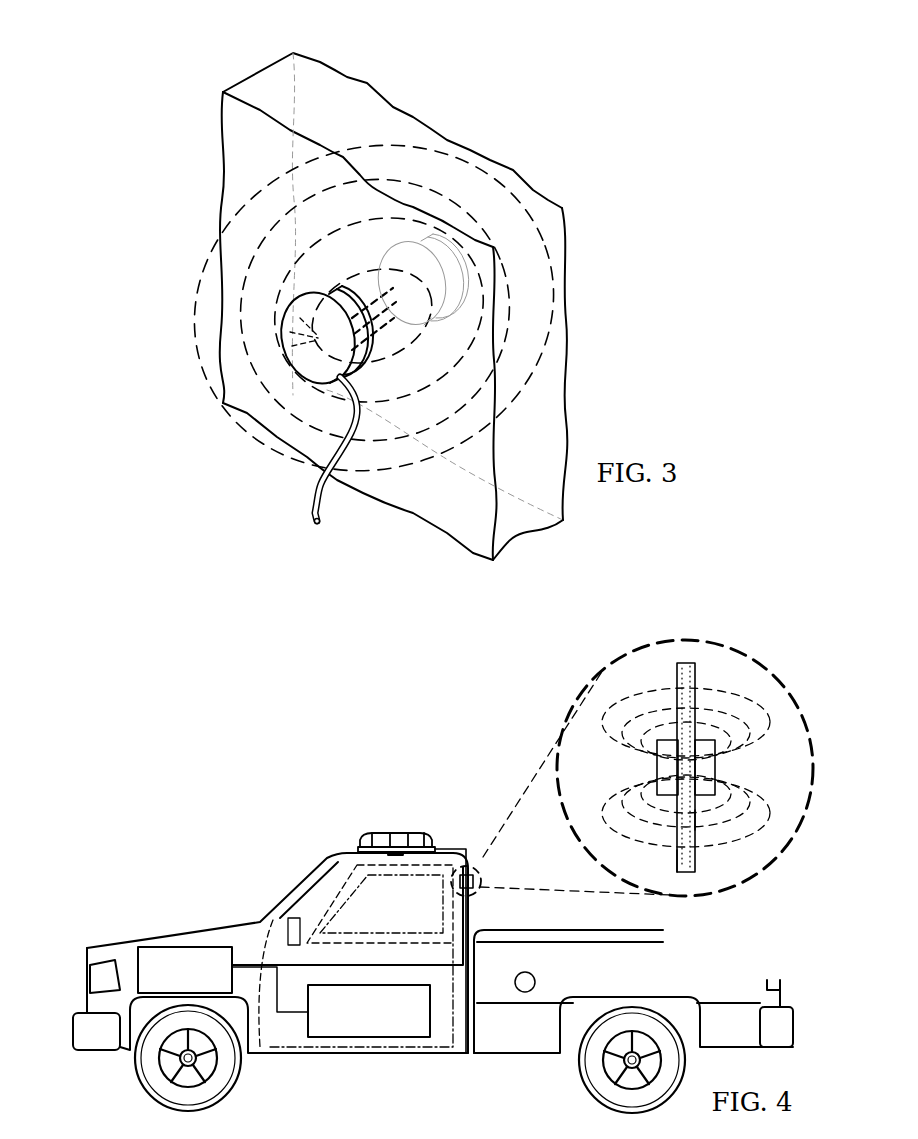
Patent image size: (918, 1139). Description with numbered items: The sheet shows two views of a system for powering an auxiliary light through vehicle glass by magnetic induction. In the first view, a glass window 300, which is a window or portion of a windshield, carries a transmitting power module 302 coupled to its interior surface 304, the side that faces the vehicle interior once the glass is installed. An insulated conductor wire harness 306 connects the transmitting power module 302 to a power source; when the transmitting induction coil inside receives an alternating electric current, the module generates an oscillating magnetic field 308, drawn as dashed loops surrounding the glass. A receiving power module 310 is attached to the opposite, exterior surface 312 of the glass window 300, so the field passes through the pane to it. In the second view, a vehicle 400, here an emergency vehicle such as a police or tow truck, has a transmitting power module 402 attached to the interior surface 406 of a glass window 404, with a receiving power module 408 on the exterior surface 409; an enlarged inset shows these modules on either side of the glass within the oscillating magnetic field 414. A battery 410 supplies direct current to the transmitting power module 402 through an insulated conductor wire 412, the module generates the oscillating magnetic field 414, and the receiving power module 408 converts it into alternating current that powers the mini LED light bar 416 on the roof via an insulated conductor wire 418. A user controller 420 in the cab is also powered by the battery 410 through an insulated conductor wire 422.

In FIG. 3, the glass window 300 is at (253, 76).
In FIG. 3, the transmitting power module 302 is at (298, 353).
In FIG. 3, the interior surface 304 is at (233, 172).
In FIG. 3, the insulated conductor wire harness 306 is at (310, 510).
In FIG. 3, the oscillating magnetic field 308 is at (239, 462).
In FIG. 3, the receiving power module 310 is at (417, 277).
In FIG. 3, the exterior surface 312 is at (567, 297).
In FIG. 4, the vehicle 400 is at (433, 891).
In FIG. 4, the transmitting power module 402 is at (452, 883).
In FIG. 4, the glass window 404 is at (678, 682).
In FIG. 4, the interior surface 406 is at (678, 853).
In FIG. 4, the receiving power module 408 is at (483, 872).
In FIG. 4, the exterior surface 409 is at (698, 817).
In FIG. 4, the battery 410 is at (187, 947).
In FIG. 4, the insulated conductor wire 412 is at (257, 963).
In FIG. 4, the oscillating magnetic field 414 is at (733, 908).
In FIG. 4, the mini LED light bar 416 is at (397, 833).
In FIG. 4, the insulated conductor wire 418 is at (450, 850).
In FIG. 4, the user controller 420 is at (367, 1038).
In FIG. 4, the insulated conductor wire 422 is at (297, 1013).